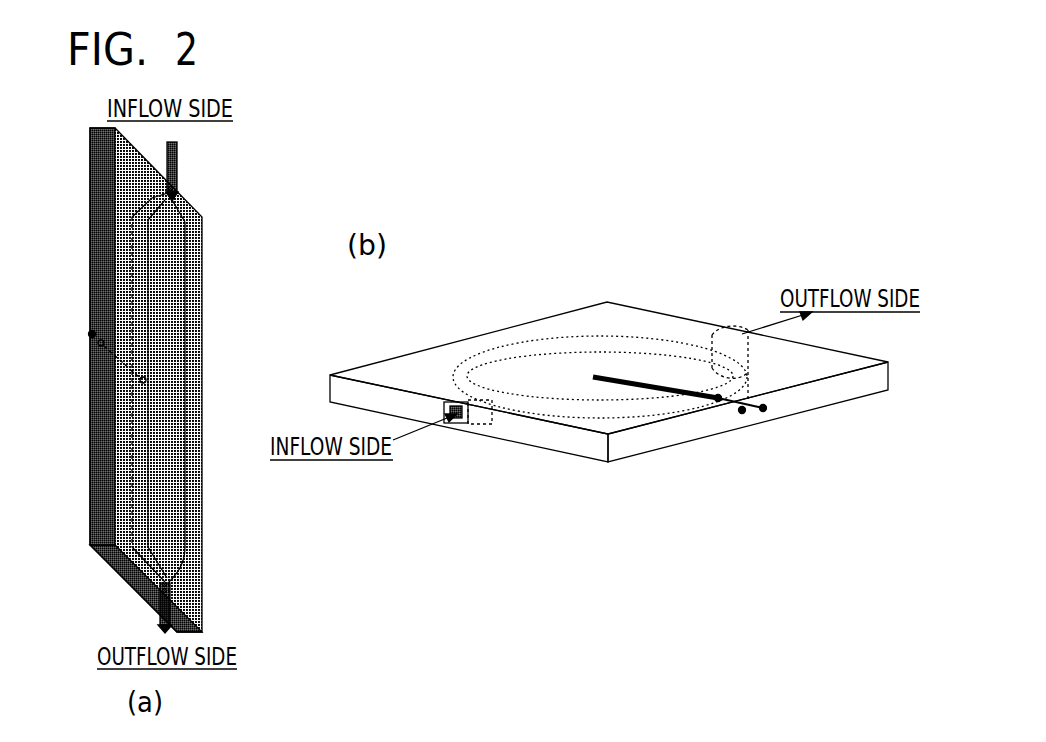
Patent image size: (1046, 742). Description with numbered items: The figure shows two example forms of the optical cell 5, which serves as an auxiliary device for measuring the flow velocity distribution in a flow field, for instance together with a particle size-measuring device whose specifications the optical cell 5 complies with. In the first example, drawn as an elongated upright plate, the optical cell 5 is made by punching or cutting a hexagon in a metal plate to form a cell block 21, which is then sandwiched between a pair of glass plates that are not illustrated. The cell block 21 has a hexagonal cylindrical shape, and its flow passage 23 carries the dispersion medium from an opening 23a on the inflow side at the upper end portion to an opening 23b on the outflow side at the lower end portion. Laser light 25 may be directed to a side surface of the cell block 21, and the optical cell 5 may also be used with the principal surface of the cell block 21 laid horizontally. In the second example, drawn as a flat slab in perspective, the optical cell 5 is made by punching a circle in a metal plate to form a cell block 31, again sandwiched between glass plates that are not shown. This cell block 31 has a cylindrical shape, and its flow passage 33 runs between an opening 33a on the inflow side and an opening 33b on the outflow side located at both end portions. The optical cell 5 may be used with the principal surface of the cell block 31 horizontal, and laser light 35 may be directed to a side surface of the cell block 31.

The optical cell 5 is at (218, 219).
The cell block 21 is at (117, 176).
The flow passage 23 is at (183, 376).
The opening 23a is at (170, 200).
The opening 23b is at (163, 580).
The laser light 25 is at (90, 333).
The cell block 31 is at (418, 365).
The flow passage 33 is at (593, 397).
The opening 33a is at (478, 420).
The opening 33b is at (740, 335).
The laser light 35 is at (742, 410).